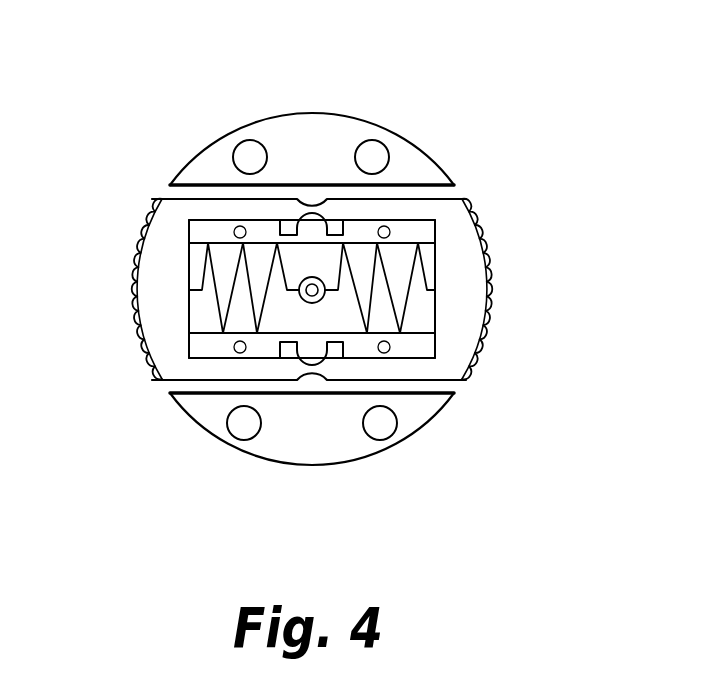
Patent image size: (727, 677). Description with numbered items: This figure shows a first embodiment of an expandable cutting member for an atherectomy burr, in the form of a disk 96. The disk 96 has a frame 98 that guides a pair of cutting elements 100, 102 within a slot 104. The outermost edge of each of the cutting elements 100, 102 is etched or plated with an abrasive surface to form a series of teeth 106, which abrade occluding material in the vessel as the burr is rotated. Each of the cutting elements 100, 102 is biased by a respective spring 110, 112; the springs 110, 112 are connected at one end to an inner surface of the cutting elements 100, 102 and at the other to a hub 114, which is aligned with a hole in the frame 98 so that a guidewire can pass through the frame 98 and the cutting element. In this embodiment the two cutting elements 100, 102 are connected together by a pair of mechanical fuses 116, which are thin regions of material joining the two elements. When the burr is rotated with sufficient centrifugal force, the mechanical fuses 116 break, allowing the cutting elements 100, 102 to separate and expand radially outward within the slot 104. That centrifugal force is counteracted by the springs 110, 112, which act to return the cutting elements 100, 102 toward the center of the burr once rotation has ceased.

The disk 96 is at (278, 113).
The frame 98 is at (335, 113).
The cutting element 100 is at (153, 307).
The cutting element 102 is at (476, 293).
The slot 104 is at (450, 193).
The teeth 106 is at (142, 253).
The spring 110 is at (228, 335).
The spring 112 is at (410, 333).
The hub 114 is at (316, 278).
The mechanical fuses 116 is at (280, 210).